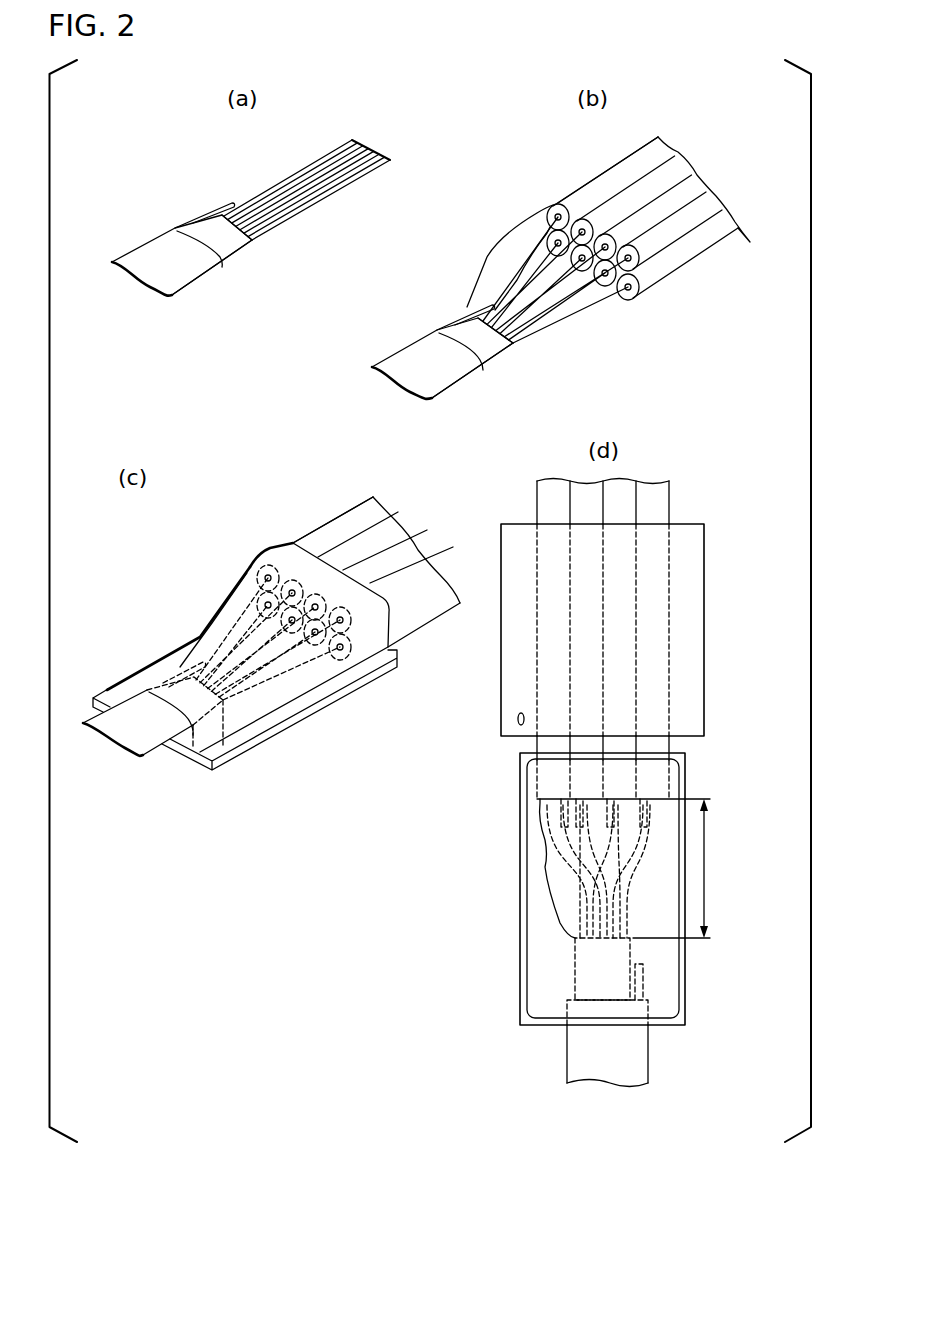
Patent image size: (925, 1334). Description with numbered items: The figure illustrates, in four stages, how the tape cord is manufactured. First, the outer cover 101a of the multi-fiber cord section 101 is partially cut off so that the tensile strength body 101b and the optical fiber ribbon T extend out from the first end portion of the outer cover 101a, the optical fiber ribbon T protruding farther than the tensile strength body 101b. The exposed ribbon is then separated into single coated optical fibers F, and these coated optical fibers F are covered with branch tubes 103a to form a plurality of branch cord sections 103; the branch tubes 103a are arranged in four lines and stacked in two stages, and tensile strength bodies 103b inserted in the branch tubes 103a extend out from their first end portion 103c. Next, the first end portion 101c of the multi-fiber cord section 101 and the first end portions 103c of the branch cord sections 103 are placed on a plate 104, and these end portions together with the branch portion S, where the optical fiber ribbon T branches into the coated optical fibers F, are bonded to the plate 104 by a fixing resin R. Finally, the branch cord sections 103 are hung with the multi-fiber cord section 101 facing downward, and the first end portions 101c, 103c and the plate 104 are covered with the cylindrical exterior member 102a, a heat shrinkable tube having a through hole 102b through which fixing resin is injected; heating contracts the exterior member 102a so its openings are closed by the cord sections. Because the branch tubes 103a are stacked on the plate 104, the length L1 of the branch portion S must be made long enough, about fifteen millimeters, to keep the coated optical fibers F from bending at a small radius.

The multi-fiber cord section 101 is at (140, 232).
The outer cover 101a is at (135, 253).
The tensile strength body 101b is at (210, 215).
The first end portion of the multi-fiber cord section 101c is at (205, 268).
The exterior member 102a is at (687, 632).
The through hole 102b is at (517, 718).
The branch cord section 103 is at (706, 275).
The branch tube 103a is at (587, 195).
The tensile strength body 103b is at (547, 805).
The first end portion of the branch tube 103c is at (637, 263).
The plate 104 is at (260, 740).
The coated optical fiber F is at (282, 177).
The optical fiber ribbon T is at (235, 243).
The branch portion S is at (512, 250).
The fixing resin R is at (257, 560).
The length of the branch portion L1 is at (681, 868).